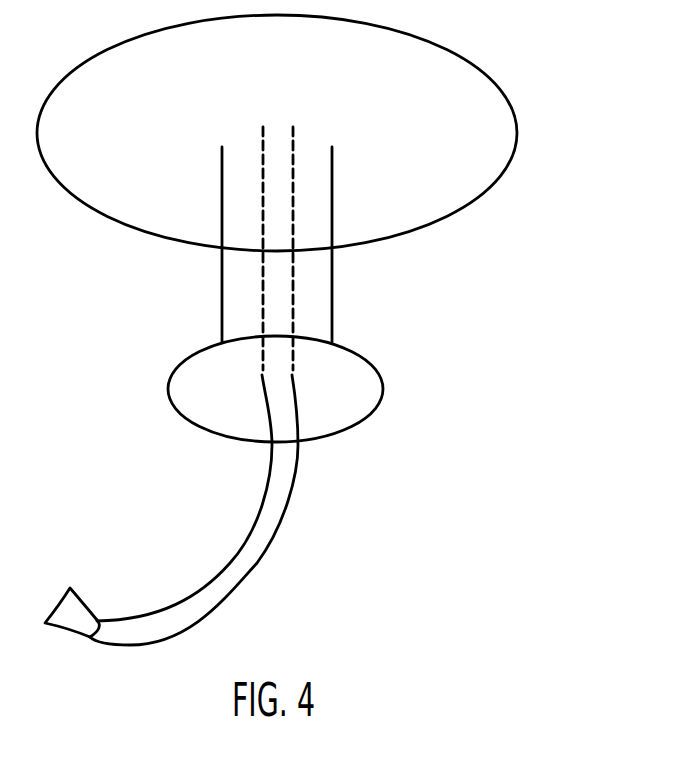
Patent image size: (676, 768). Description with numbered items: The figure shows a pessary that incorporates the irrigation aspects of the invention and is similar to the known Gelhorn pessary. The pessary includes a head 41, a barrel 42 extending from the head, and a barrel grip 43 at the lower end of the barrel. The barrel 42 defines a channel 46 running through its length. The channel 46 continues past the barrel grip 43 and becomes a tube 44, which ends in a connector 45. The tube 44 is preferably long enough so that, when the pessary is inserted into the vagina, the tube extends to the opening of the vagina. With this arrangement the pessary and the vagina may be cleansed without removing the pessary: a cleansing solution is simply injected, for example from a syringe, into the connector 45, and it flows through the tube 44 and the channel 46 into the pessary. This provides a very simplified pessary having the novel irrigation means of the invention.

The head 41 is at (505, 147).
The barrel 42 is at (320, 287).
The barrel grip 43 is at (368, 384).
The tube 44 is at (282, 500).
The connector 45 is at (77, 605).
The channel 46 is at (262, 277).